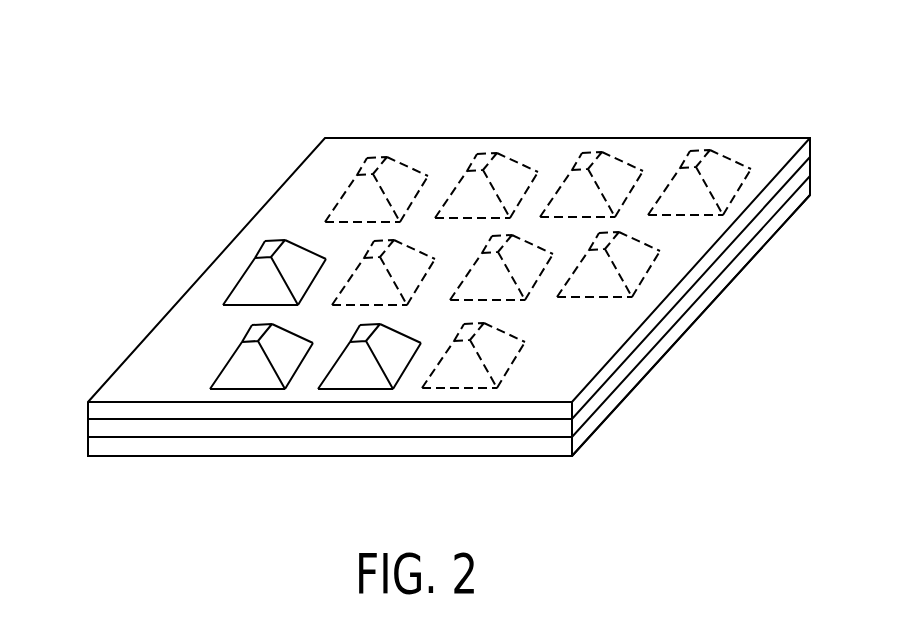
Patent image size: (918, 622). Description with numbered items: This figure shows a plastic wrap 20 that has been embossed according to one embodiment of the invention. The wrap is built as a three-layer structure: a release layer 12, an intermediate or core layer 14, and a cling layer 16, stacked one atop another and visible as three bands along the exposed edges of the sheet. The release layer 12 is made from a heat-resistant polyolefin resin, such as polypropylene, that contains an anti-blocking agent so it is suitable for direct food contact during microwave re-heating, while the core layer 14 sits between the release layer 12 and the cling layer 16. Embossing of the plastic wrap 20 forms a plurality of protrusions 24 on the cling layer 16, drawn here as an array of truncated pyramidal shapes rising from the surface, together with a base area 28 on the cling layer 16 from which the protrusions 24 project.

The release layer 12 is at (627, 387).
The intermediate or core layer 14 is at (688, 300).
The cling layer 16 is at (733, 232).
The plastic wrap 20 is at (428, 246).
The protrusions 24 is at (612, 175).
The base area 28 is at (133, 383).